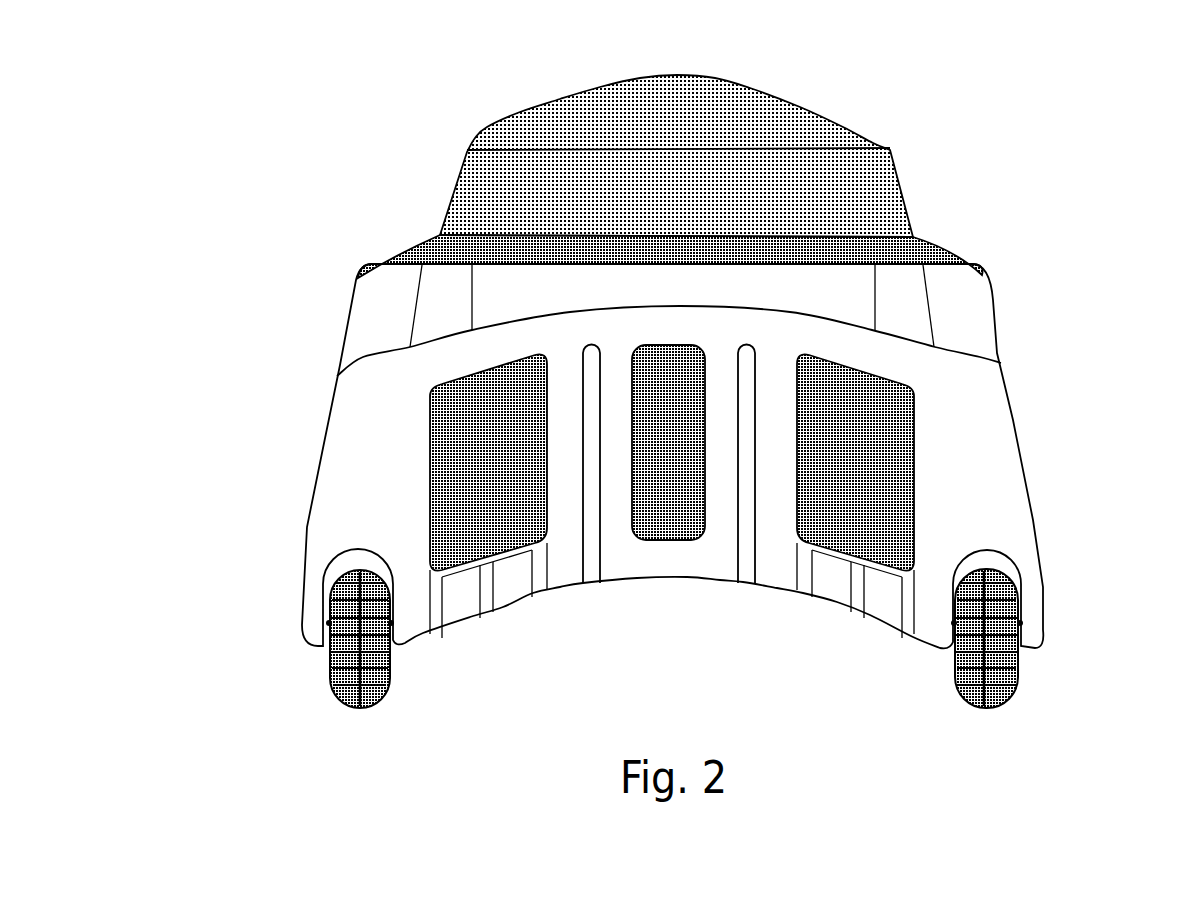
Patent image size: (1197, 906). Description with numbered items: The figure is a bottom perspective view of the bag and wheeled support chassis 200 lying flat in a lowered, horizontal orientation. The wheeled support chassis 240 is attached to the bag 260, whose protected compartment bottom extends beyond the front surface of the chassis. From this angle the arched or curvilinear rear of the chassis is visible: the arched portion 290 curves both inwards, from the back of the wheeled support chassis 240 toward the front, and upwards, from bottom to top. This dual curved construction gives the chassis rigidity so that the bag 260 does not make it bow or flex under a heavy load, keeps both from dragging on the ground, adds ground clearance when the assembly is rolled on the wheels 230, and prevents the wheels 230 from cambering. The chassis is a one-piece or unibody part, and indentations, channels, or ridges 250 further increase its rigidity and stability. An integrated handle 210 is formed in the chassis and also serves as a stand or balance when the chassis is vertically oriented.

The bag and wheeled support chassis 200 is at (244, 192).
The integrated handle 210 is at (820, 303).
The wheels 230 is at (1018, 637).
The wheeled support chassis 240 is at (1013, 470).
The indentations, channels, or ridges 250 is at (537, 582).
The bag 260 is at (820, 193).
The arched portion 290 is at (710, 550).